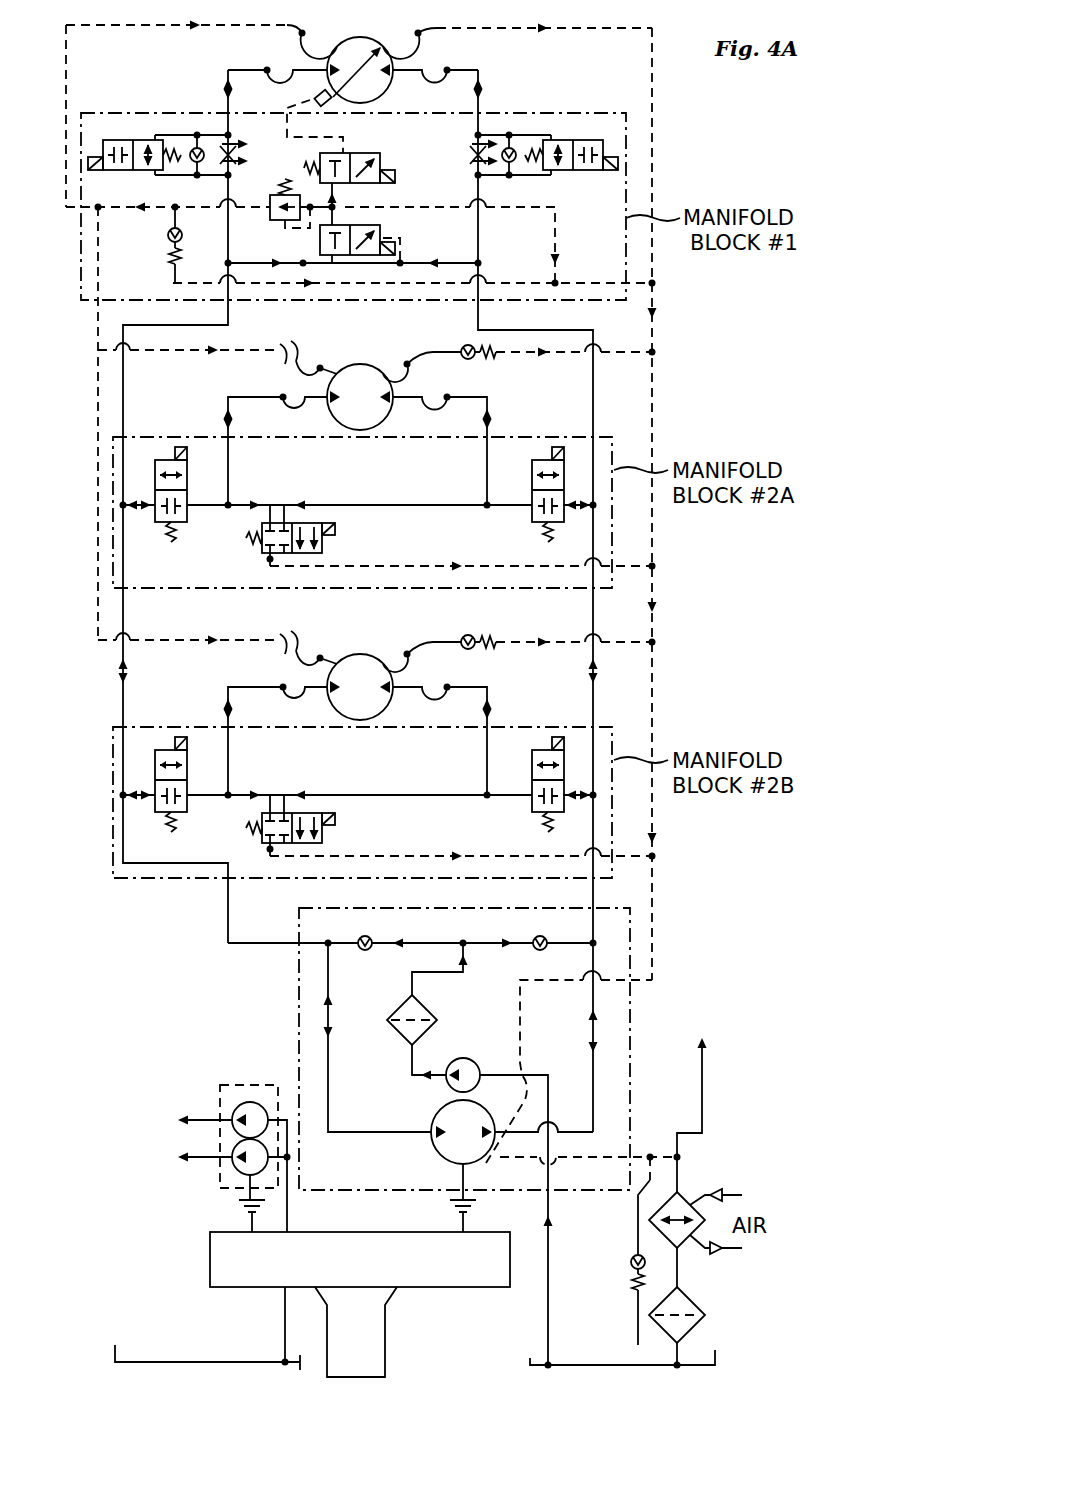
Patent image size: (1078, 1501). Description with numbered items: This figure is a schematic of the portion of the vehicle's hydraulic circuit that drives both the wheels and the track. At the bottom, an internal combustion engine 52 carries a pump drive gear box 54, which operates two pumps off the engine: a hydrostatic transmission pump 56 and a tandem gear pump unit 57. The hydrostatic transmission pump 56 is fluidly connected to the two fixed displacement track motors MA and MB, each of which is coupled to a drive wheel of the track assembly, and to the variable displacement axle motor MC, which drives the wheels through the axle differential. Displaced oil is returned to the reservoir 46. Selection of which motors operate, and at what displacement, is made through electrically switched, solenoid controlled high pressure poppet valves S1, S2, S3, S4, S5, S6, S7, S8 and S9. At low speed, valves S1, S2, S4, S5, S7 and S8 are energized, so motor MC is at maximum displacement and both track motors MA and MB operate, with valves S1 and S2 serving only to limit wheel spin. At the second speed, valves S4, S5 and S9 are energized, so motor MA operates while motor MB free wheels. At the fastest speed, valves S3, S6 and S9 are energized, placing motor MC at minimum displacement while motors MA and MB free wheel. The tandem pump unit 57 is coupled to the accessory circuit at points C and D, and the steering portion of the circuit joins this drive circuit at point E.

The hydraulic motor MC is at (361, 40).
The hydraulic motor MA is at (360, 364).
The hydraulic motor MB is at (360, 654).
The solenoid valve S1 is at (88, 155).
The solenoid valve S2 is at (618, 150).
The solenoid valve S3 is at (395, 160).
The solenoid valve S4 is at (187, 478).
The solenoid valve S5 is at (532, 478).
The solenoid valve S6 is at (335, 540).
The solenoid valve S7 is at (187, 768).
The solenoid valve S8 is at (532, 768).
The solenoid valve S9 is at (335, 830).
The reservoir 46 is at (595, 1365).
The internal combustion engine 52 is at (356, 1332).
The pump drive gear box 54 is at (360, 1259).
The hydrostatic transmission pump 56 is at (299, 973).
The pump unit 57 is at (238, 1085).
The coupling point C is at (192, 1158).
The coupling point D is at (192, 1121).
The coupling point E is at (677, 1083).